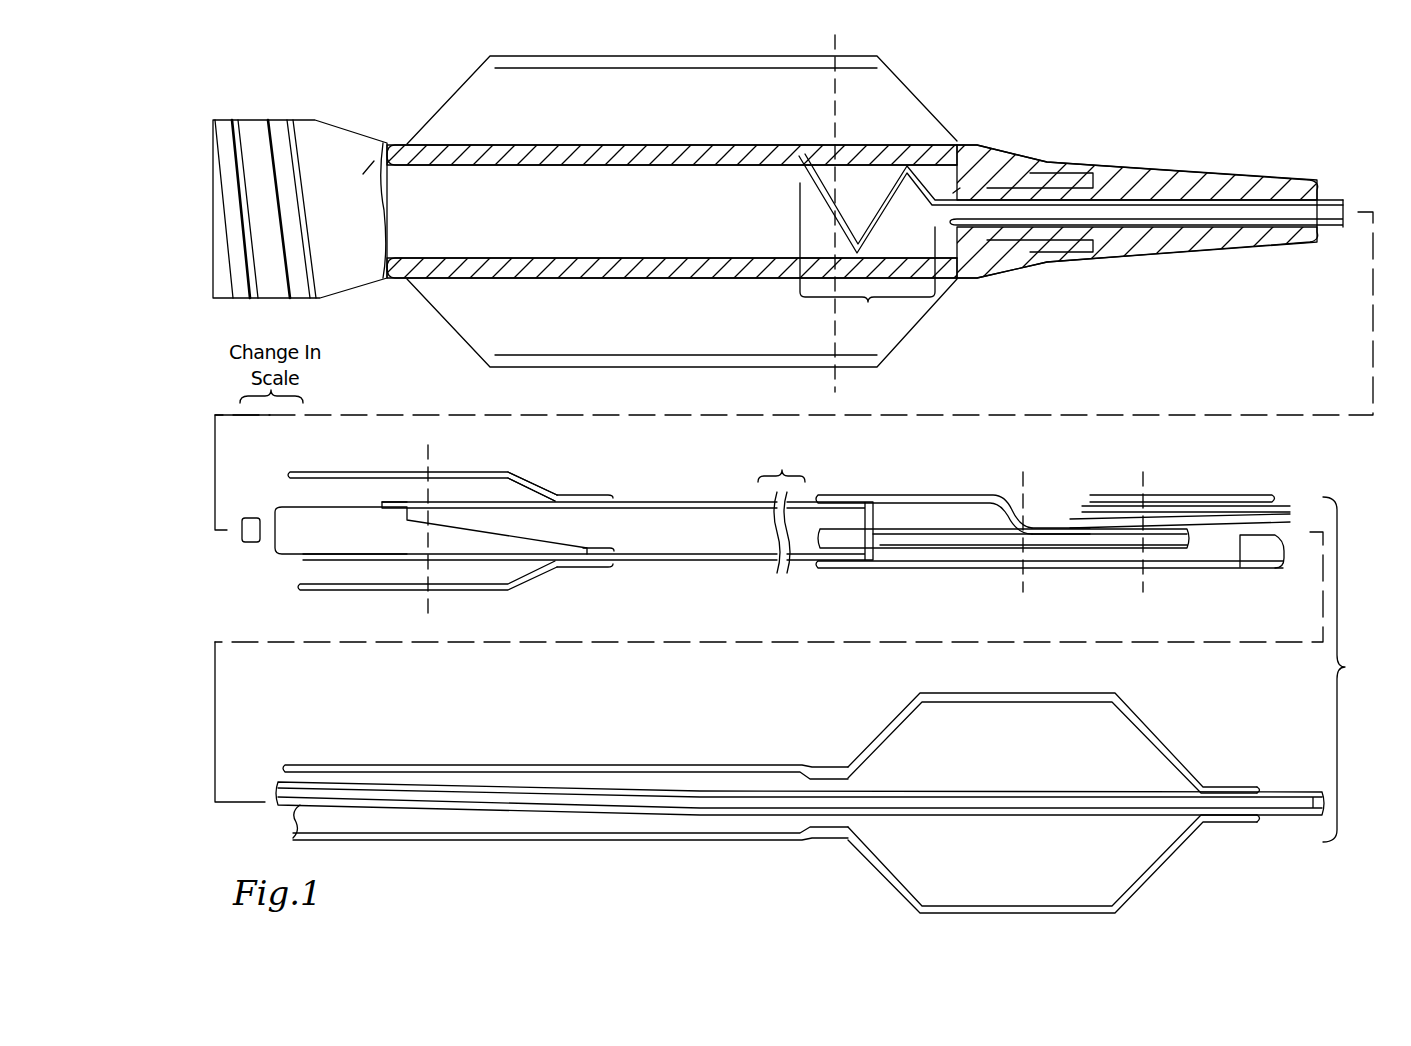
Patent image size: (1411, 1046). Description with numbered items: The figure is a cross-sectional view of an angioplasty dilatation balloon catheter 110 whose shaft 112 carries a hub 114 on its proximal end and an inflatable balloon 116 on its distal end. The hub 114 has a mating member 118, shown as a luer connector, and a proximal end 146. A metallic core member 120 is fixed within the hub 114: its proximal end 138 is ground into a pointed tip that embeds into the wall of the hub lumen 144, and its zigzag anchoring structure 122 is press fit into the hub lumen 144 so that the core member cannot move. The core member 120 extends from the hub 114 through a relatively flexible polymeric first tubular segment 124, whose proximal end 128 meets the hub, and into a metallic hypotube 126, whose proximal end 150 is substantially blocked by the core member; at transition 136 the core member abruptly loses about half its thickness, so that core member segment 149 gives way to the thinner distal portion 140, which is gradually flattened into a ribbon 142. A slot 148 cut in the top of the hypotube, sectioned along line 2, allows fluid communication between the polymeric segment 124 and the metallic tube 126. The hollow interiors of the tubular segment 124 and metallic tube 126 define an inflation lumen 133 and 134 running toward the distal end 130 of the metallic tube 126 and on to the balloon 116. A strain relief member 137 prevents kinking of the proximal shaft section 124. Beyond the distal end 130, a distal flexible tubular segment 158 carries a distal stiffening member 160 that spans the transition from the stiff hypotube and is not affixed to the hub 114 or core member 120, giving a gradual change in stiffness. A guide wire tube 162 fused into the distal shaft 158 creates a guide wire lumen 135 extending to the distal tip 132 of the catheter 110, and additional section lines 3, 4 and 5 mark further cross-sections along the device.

The catheter 110 is at (1265, 842).
The shaft 112 is at (1338, 168).
The hub 114 is at (1023, 130).
The balloon 116 is at (1138, 747).
The mating member 118 is at (313, 132).
The core member 120 is at (813, 175).
The zigzag anchoring structure 122 is at (867, 257).
The first tubular segment 124 is at (1167, 227).
The metallic tube 126 is at (683, 560).
The proximal end 128 is at (955, 190).
The distal end 130 is at (852, 563).
The distal tip 132 is at (1317, 792).
The inflation lumen 133 is at (300, 575).
The inflation lumen 134 is at (680, 520).
The guide wire lumen 135 is at (1170, 518).
The transition 136 is at (480, 504).
The strain relief member 137 is at (1182, 180).
The proximal end 138 is at (800, 153).
The distal end 140 is at (443, 540).
The ribbon 142 is at (577, 553).
The hub lumen 144 is at (525, 230).
The proximal end 146 is at (215, 213).
The slot 148 is at (437, 502).
The core member segment 149 is at (355, 518).
The proximal end 150 is at (387, 558).
The distal flexible tubular segment 158 is at (920, 570).
The distal stiffening member 160 is at (873, 538).
The guide wire tube 162 is at (1240, 540).
The section line 2— 2 is at (383, 615).
The section line 3 is at (980, 592).
The section line 4 is at (1188, 592).
The section line 5 is at (877, 392).